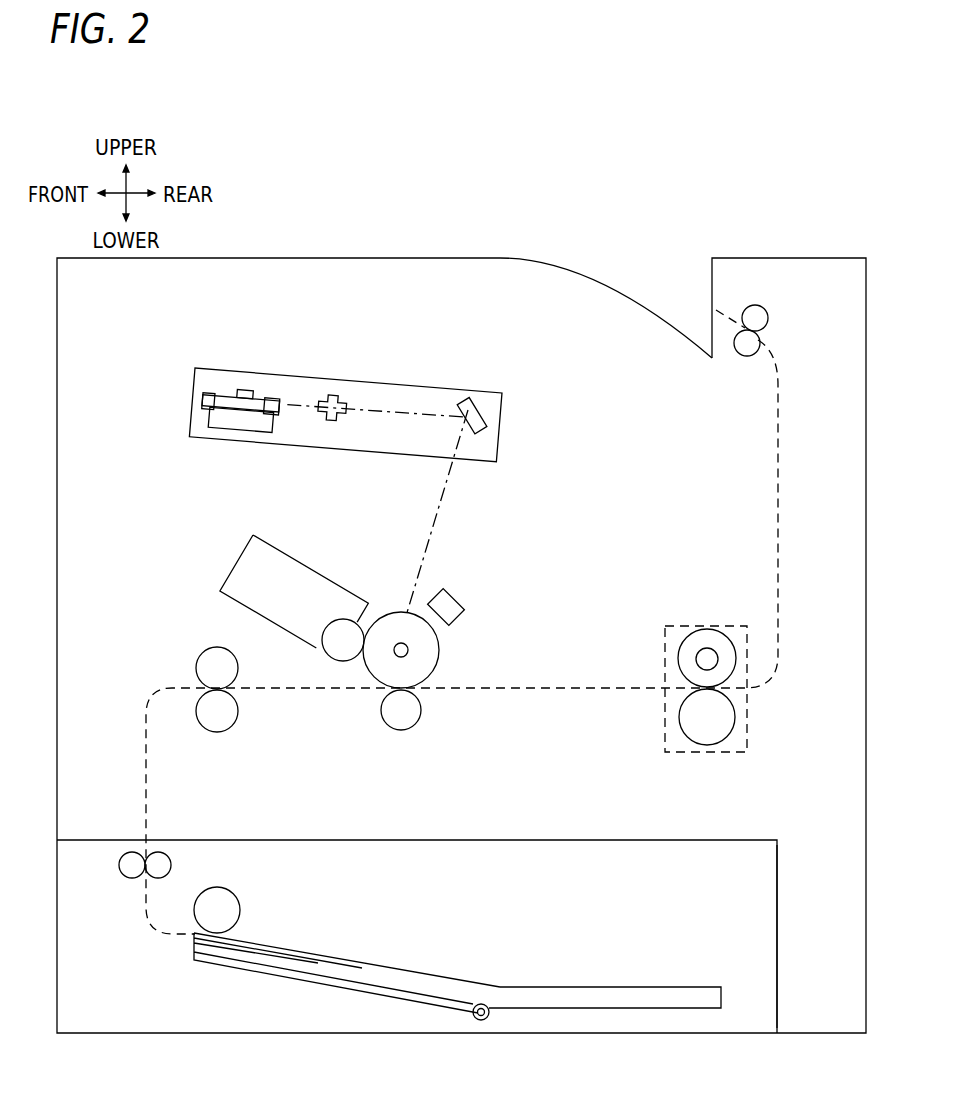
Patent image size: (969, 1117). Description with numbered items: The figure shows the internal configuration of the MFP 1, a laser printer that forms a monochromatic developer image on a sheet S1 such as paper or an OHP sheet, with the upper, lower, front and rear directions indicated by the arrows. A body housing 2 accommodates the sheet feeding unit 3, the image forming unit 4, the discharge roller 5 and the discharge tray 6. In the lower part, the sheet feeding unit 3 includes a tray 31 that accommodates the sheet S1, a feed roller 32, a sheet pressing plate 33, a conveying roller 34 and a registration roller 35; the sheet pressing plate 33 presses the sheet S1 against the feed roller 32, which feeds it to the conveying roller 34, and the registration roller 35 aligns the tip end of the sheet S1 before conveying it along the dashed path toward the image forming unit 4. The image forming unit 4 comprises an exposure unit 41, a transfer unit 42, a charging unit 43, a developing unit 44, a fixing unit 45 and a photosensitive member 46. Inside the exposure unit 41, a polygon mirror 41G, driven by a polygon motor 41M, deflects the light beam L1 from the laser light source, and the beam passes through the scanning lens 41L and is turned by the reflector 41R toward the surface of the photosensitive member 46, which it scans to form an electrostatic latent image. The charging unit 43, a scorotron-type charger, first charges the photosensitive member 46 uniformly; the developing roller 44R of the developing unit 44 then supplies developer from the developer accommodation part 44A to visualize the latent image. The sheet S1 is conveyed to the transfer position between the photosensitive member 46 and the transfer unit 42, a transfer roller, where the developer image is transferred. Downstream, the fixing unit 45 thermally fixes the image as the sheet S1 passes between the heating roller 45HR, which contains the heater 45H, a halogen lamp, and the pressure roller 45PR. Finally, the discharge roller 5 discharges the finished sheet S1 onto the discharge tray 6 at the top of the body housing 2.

The MFP 1 is at (785, 181).
The body housing 2 is at (315, 258).
The sheet feeding unit 3 is at (441, 909).
The image forming unit 4 is at (588, 448).
The discharge roller 5 is at (768, 318).
The discharge tray 6 is at (603, 280).
The tray 31 is at (778, 939).
The feed roller 32 is at (232, 893).
The sheet pressing plate 33 is at (318, 984).
The conveying roller 34 is at (118, 865).
The registration roller 35 is at (218, 732).
The exposure unit 41 is at (350, 410).
The polygon mirror 41G is at (241, 401).
The scanning lens 41L is at (332, 407).
The polygon motor 41M is at (240, 419).
The reflector 41R is at (472, 416).
The transfer unit 42 is at (405, 731).
The charging unit 43 is at (452, 593).
The developing unit 44 is at (278, 585).
The developer accommodation part 44A is at (313, 571).
The developing roller 44R is at (325, 622).
The fixing unit 45 is at (681, 661).
The heater 45H is at (710, 649).
The heating roller 45HR is at (677, 658).
The pressure roller 45PR is at (678, 716).
The photosensitive member 46 is at (402, 612).
The light beam L1 is at (446, 500).
The sheet S1 is at (608, 987).